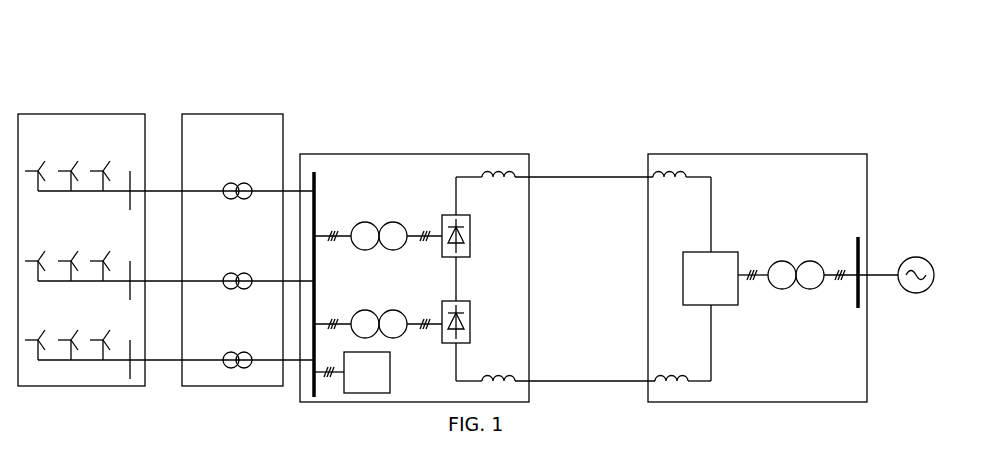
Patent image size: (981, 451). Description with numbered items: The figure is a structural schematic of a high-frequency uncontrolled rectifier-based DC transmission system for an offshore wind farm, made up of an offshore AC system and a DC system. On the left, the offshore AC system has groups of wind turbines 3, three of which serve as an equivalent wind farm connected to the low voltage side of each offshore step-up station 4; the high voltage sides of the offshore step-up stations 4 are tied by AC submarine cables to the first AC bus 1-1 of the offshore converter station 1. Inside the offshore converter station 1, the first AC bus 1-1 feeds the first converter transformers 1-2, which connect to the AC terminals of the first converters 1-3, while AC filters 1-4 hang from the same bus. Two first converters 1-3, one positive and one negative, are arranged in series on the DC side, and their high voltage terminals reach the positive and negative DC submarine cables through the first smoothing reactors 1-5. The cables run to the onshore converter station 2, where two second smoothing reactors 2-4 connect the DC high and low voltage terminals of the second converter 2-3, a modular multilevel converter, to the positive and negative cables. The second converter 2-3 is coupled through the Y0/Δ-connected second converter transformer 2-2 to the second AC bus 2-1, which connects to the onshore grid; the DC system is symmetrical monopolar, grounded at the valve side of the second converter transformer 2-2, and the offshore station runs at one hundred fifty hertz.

The offshore converter station 1 is at (414, 227).
The first AC bus 1-1 is at (348, 282).
The first converter transformers 1-2 is at (378, 260).
The first converters 1-3 is at (485, 279).
The AC filters 1-4 is at (380, 371).
The first smoothing reactors 1-5 is at (555, 253).
The onshore converter station 2 is at (757, 227).
The second AC bus 2-1 is at (896, 257).
The second converter transformer 2-2 is at (798, 247).
The second converter 2-3 is at (732, 252).
The second smoothing reactors 2-4 is at (688, 252).
The wind turbines 3 is at (166, 199).
The offshore step-up stations 4 is at (250, 199).